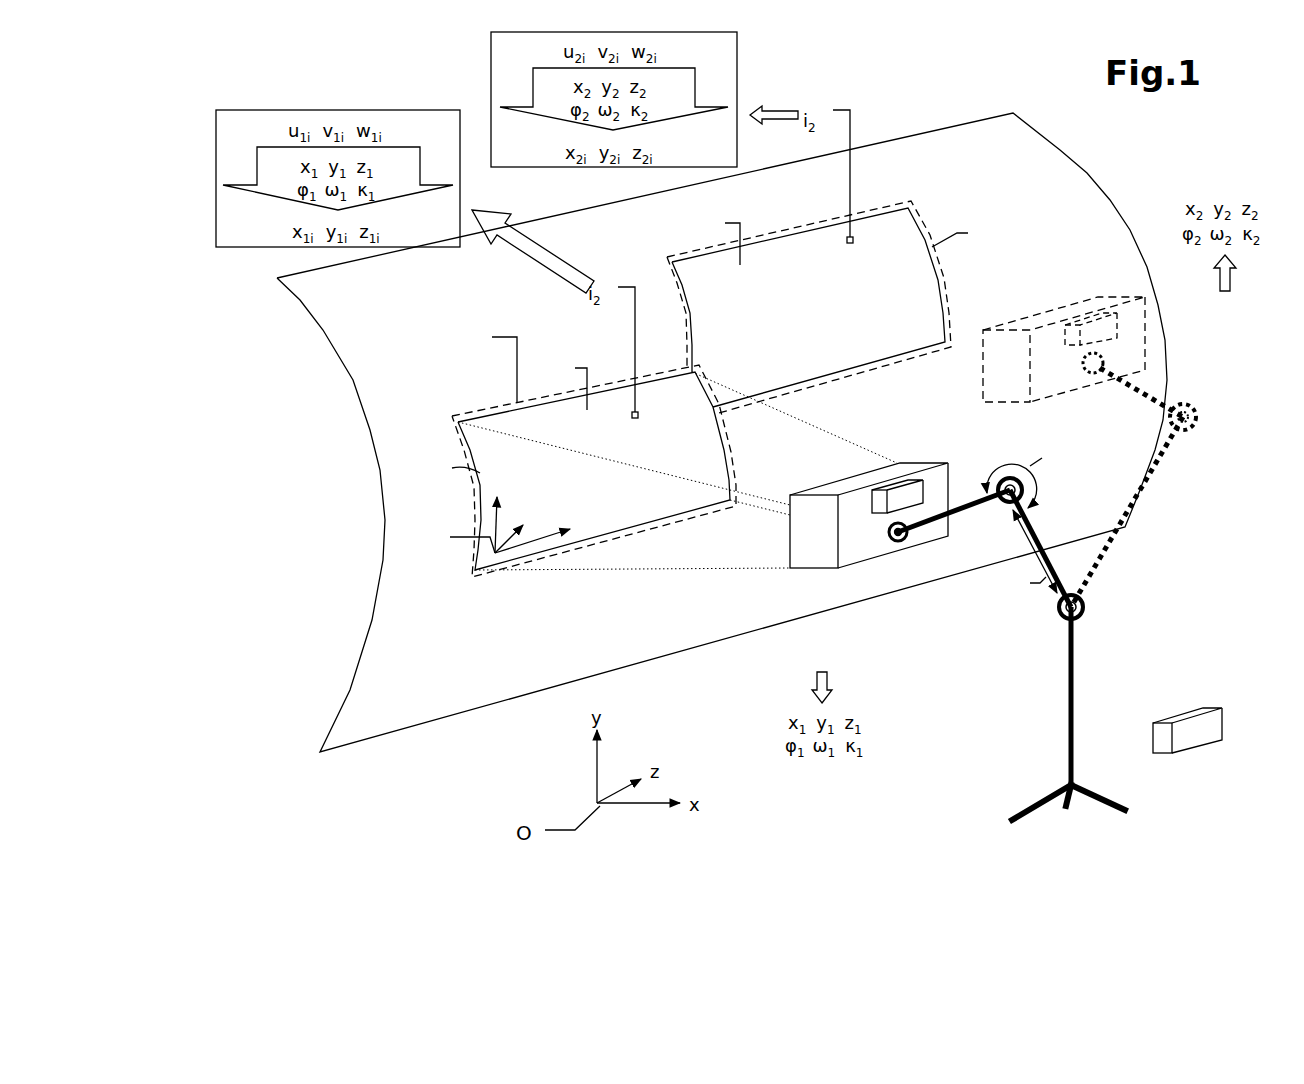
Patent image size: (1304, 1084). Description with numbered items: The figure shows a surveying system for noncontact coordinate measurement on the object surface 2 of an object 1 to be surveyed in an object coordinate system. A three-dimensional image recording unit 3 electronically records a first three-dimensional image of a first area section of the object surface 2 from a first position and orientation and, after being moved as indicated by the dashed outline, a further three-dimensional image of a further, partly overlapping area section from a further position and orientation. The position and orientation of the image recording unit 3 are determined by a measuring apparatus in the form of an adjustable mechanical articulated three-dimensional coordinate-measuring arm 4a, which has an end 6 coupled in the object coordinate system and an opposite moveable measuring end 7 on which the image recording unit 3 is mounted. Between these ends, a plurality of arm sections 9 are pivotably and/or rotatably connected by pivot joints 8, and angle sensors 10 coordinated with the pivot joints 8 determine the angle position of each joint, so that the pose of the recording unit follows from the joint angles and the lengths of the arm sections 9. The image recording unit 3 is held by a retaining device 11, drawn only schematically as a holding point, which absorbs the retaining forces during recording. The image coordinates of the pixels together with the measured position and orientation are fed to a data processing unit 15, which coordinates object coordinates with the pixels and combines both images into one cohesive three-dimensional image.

The object 1 is at (699, 432).
The object surface 2 is at (722, 432).
The 3D image recording unit 3 is at (1009, 473).
The articulated 3D coordinate-measuring arm 4a is at (1084, 594).
The end 6 is at (1050, 800).
The moveable measuring end 7 is at (996, 489).
The pivot joints 8 is at (1165, 506).
The arm sections 9 is at (1140, 636).
The angle sensors 10 is at (1040, 511).
The retaining device 11 is at (967, 397).
The data processing unit 15 is at (1186, 748).